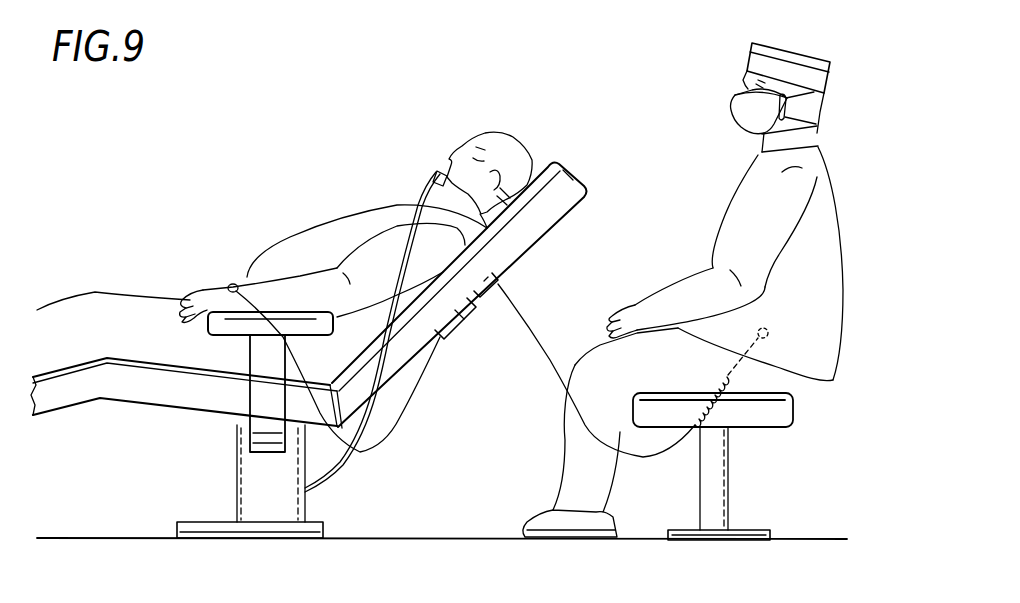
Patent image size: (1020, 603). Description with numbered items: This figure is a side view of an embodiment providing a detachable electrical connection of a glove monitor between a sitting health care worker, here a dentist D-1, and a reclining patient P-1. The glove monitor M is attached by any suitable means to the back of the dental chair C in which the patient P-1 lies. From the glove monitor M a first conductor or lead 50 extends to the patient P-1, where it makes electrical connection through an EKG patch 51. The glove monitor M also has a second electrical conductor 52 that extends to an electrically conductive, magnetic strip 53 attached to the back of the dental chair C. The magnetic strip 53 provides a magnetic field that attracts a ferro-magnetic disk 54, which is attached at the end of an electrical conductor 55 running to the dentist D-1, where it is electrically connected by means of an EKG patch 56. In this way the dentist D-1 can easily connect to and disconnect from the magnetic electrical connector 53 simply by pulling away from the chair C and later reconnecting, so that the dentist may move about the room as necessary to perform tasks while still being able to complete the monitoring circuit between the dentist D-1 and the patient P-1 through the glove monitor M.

The dental chair C is at (120, 390).
The patient P-1 is at (288, 238).
The dentist D-1 is at (833, 213).
The first conductor or lead 50 is at (402, 422).
The EKG patch 51 is at (233, 283).
The second electrical conductor 52 is at (476, 310).
The glove monitor M is at (450, 338).
The electrically conductive magnetic strip 53 is at (499, 276).
The ferro-magnetic disk 54 is at (500, 287).
The electrical conductor 55 is at (560, 378).
The EKG patch 56 is at (770, 333).